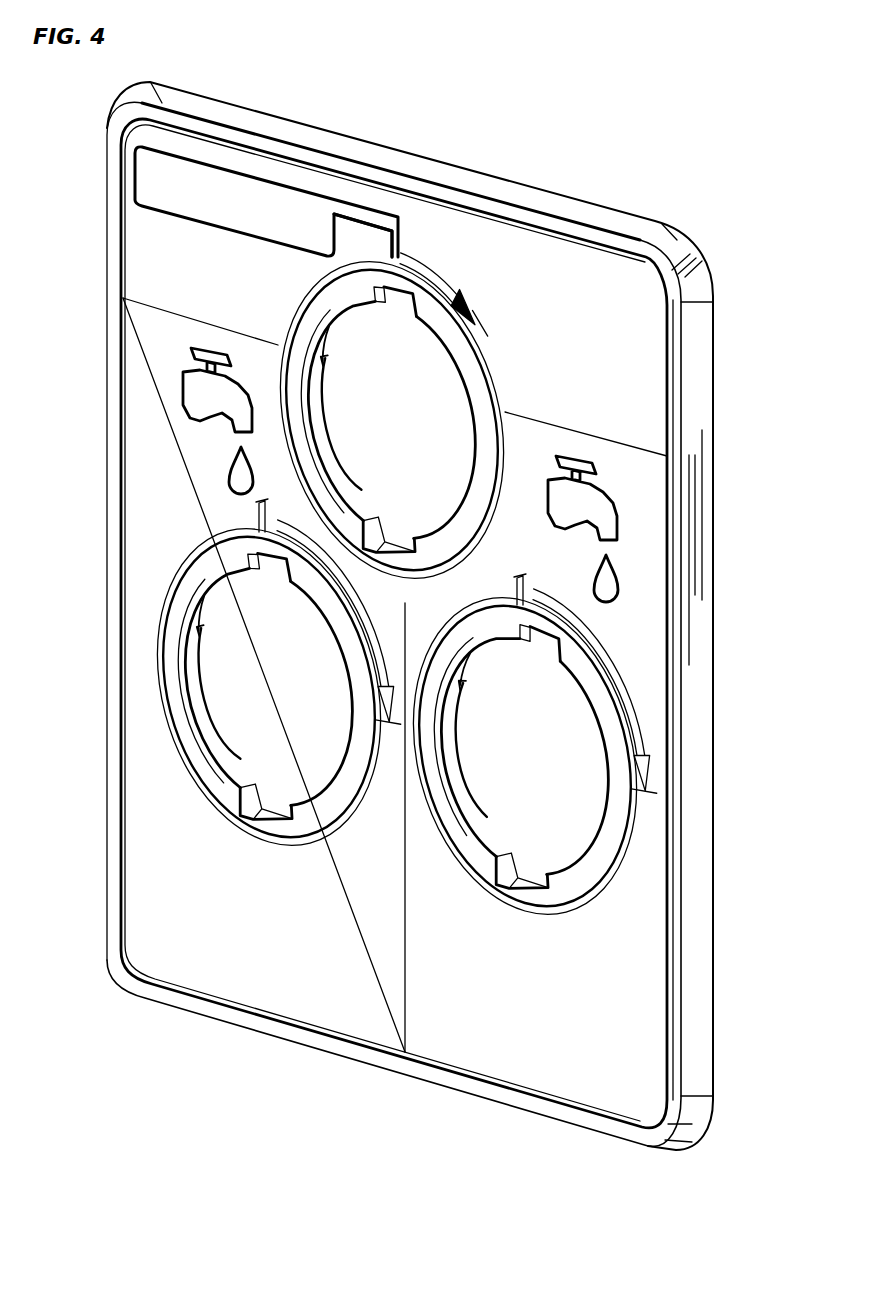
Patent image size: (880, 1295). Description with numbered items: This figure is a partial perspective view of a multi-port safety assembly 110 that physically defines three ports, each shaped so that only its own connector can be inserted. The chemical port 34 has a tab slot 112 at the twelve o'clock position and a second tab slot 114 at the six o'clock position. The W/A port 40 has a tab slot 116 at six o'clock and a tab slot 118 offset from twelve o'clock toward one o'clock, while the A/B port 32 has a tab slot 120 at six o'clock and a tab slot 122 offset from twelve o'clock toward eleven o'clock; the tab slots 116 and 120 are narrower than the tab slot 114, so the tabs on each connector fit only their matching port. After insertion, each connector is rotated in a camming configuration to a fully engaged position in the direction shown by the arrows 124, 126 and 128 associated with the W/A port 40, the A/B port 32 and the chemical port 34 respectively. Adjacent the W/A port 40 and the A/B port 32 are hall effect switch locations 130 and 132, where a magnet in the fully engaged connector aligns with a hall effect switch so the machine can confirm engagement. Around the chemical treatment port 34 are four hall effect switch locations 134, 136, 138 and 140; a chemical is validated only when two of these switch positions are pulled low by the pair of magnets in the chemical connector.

The multi-port safety assembly 110 is at (624, 188).
The hall effect switch location 134 is at (399, 230).
The arrow 128 is at (454, 262).
The hall effect switch location 140 is at (278, 343).
The tab slot 112 is at (428, 306).
The chemical port 34 is at (435, 419).
The hall effect switch location 136 is at (514, 430).
The second tab slot 114 is at (396, 538).
The hall effect switch location 132 is at (258, 510).
The hall effect switch location 130 is at (528, 575).
The tab slot 122 is at (245, 570).
The hall effect switch location 138 is at (412, 602).
The arrow 126 is at (343, 640).
The A/B port 32 is at (243, 672).
The tab slot 118 is at (538, 643).
The arrow 124 is at (648, 700).
The tab slot 120 is at (262, 810).
The W/A port 40 is at (569, 801).
The tab slot 116 is at (530, 900).